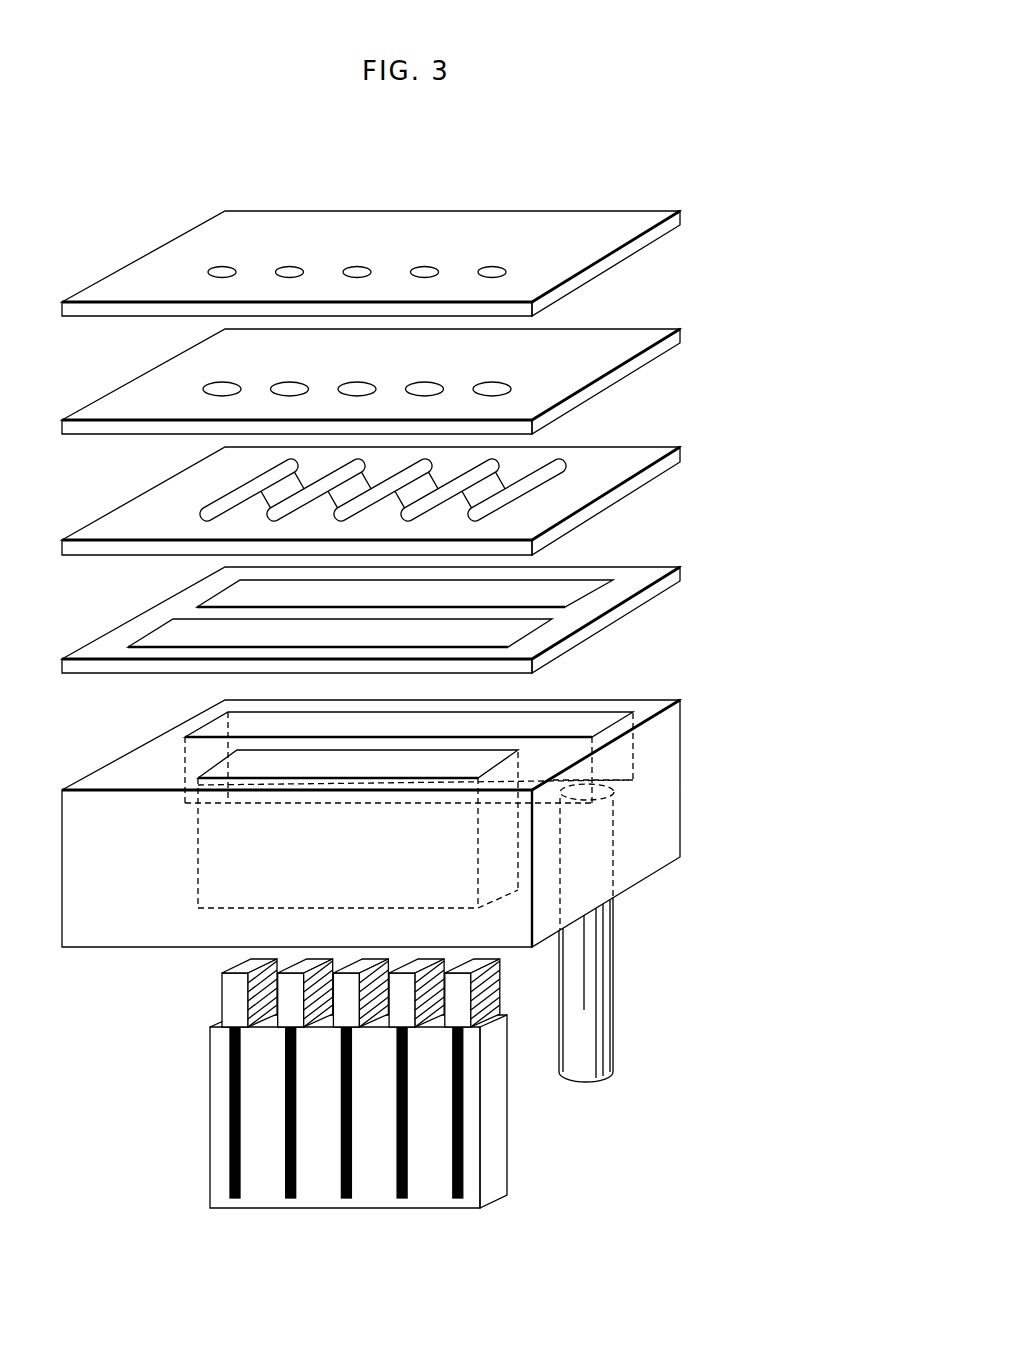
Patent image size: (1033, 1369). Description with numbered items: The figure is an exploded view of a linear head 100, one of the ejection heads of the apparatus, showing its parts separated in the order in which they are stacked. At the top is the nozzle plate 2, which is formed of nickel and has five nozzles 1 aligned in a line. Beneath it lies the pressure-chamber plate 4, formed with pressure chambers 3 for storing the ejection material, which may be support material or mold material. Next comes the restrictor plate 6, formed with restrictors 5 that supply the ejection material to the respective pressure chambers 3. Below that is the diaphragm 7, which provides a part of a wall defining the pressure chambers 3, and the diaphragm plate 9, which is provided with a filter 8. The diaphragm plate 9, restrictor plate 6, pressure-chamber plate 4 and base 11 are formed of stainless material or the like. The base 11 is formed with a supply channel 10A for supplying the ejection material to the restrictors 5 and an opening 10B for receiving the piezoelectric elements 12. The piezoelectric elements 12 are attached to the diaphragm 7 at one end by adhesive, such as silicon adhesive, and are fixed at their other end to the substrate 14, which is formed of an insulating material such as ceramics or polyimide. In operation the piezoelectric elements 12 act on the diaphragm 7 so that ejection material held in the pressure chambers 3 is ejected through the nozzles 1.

The linear head 100 is at (752, 170).
The nozzles 1 is at (488, 268).
The nozzle plate 2 is at (680, 212).
The pressure chambers 3 is at (488, 385).
The pressure-chamber plate 4 is at (680, 330).
The restrictors 5 is at (560, 472).
The restrictor plate 6 is at (680, 448).
The diaphragm 7 is at (177, 636).
The filter 8 is at (533, 597).
The diaphragm plate 9 is at (680, 567).
The supply channel 10A is at (588, 727).
The opening 10B is at (230, 775).
The base 11 is at (680, 762).
The piezoelectric elements 12 is at (222, 1000).
The substrate 14 is at (210, 1150).